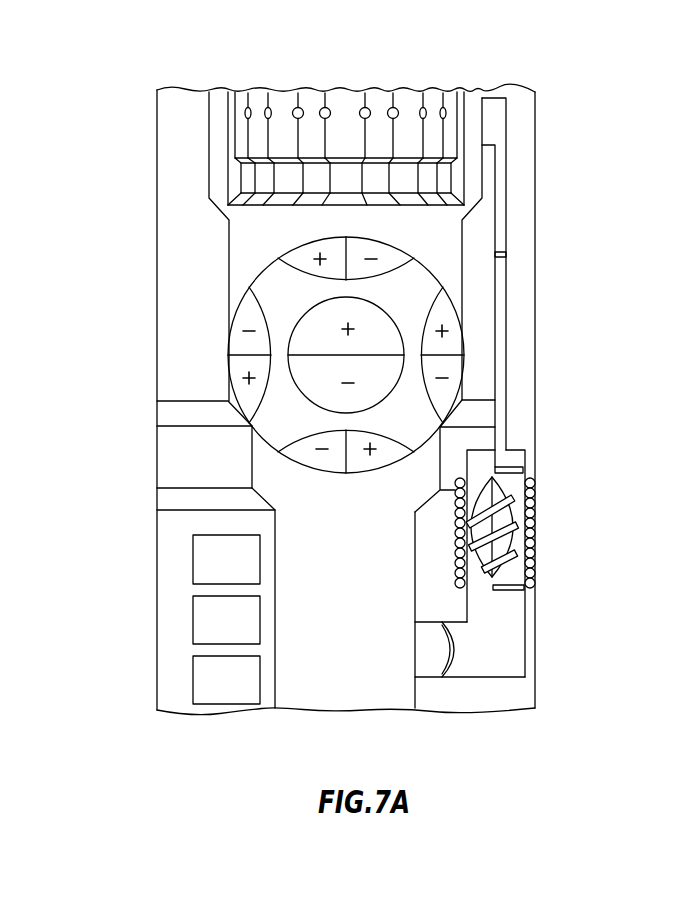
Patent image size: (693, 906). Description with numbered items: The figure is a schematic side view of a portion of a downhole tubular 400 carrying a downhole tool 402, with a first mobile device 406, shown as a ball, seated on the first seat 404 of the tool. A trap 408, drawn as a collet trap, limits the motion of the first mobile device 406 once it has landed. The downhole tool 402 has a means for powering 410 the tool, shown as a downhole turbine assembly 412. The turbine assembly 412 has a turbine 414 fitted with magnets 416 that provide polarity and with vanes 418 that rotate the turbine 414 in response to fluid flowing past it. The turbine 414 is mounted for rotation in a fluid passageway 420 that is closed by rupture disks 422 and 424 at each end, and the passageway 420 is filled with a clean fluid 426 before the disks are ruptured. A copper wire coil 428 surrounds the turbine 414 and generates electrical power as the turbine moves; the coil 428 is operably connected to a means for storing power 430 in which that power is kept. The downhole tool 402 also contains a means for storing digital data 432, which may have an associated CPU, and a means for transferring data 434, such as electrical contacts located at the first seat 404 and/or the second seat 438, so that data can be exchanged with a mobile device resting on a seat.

The downhole tubular 400 is at (123, 110).
The downhole tool 402 is at (157, 220).
The first seat 404 is at (250, 423).
The first mobile device 406 is at (332, 345).
The trap 408 is at (205, 352).
The means for powering 410 is at (549, 459).
The downhole turbine assembly 412 is at (526, 498).
The turbine 414 is at (533, 512).
The magnets 416 is at (518, 522).
The vanes 418 is at (532, 564).
The fluid passageway 420 is at (500, 609).
The rupture disk 422 is at (497, 253).
The rupture disk 424 is at (443, 652).
The clean fluid 426 is at (495, 633).
The copper wire coil 428 is at (432, 553).
The means for storing power 430 is at (193, 668).
The means for storing digital data 432 is at (193, 614).
The means for transferring data 434 is at (193, 553).
The second seat 438 is at (262, 500).